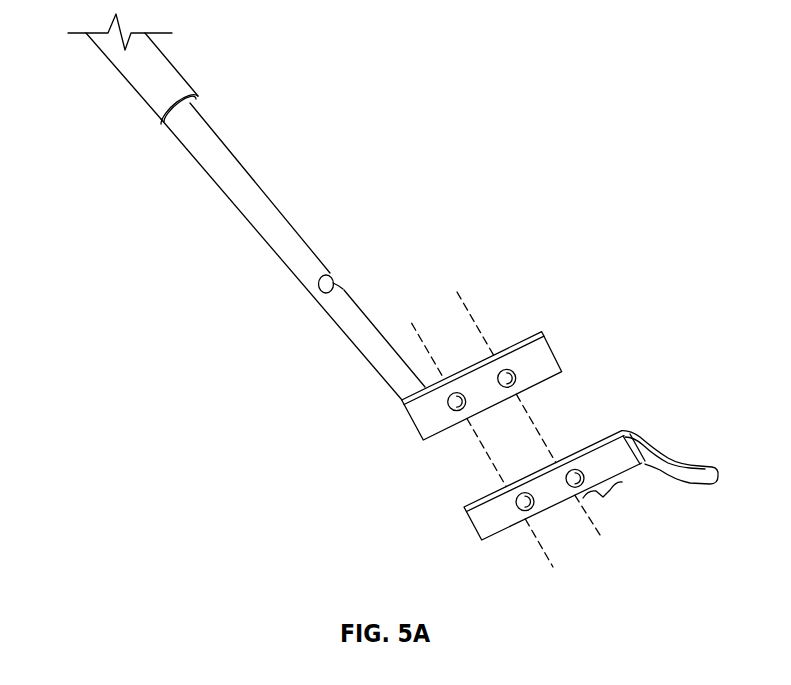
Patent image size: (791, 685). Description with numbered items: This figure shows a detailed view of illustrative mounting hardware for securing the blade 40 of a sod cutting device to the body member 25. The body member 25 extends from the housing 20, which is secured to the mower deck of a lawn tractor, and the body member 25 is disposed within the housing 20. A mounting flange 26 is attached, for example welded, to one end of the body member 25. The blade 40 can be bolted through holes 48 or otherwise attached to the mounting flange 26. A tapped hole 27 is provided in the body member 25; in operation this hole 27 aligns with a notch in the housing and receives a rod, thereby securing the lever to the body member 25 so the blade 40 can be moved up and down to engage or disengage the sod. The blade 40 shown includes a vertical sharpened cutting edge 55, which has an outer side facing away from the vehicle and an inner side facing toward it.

The housing 20 is at (115, 90).
The body member 25 is at (290, 188).
The tapped hole 27 is at (338, 280).
The mounting flange 26 is at (588, 335).
The blade 40 is at (470, 527).
The holes 48 is at (555, 387).
The vertical sharpened cutting edge 55 is at (603, 500).